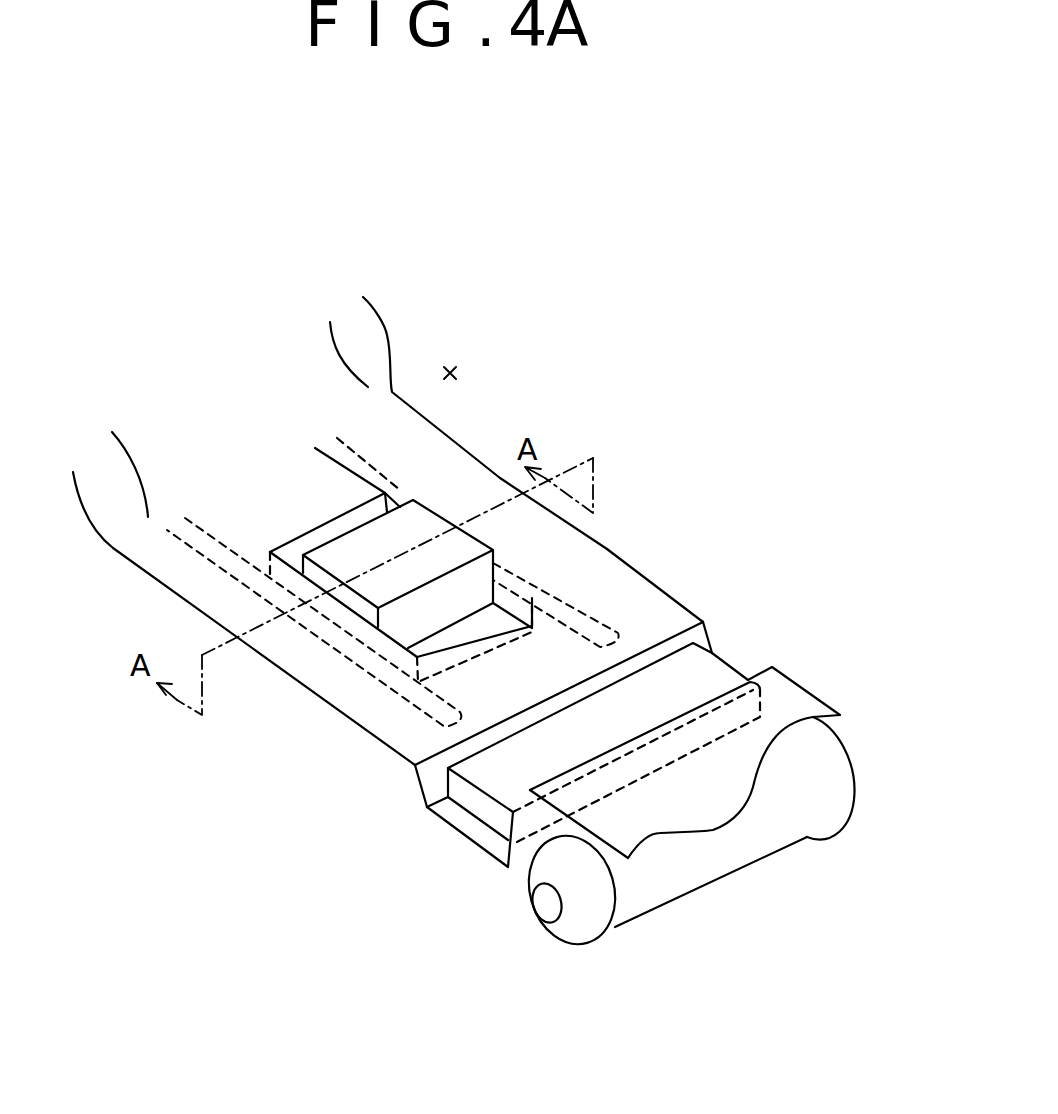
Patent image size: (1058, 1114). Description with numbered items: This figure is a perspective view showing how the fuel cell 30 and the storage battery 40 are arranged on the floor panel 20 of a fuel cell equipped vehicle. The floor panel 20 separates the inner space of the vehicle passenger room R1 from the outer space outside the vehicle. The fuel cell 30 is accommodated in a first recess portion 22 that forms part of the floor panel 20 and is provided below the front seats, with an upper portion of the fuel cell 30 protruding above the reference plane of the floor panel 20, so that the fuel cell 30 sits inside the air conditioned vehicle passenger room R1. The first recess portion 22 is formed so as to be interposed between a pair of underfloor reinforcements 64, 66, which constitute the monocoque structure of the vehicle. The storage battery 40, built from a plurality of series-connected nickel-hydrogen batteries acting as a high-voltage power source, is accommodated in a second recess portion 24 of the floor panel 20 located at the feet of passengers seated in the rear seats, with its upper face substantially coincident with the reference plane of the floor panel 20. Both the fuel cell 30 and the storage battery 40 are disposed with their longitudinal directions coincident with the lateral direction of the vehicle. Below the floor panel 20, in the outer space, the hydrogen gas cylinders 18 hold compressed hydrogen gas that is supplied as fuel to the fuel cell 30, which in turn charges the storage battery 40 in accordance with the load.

The hydrogen gas cylinder 18 is at (587, 917).
The floor panel 20 is at (418, 452).
The first recess portion 22 is at (472, 620).
The second recess portion 24 is at (478, 822).
The fuel cell 30 is at (417, 523).
The storage battery 40 is at (490, 775).
The underfloor reinforcement 64 is at (445, 703).
The underfloor reinforcement 66 is at (600, 630).
The vehicle passenger room R1 is at (450, 370).